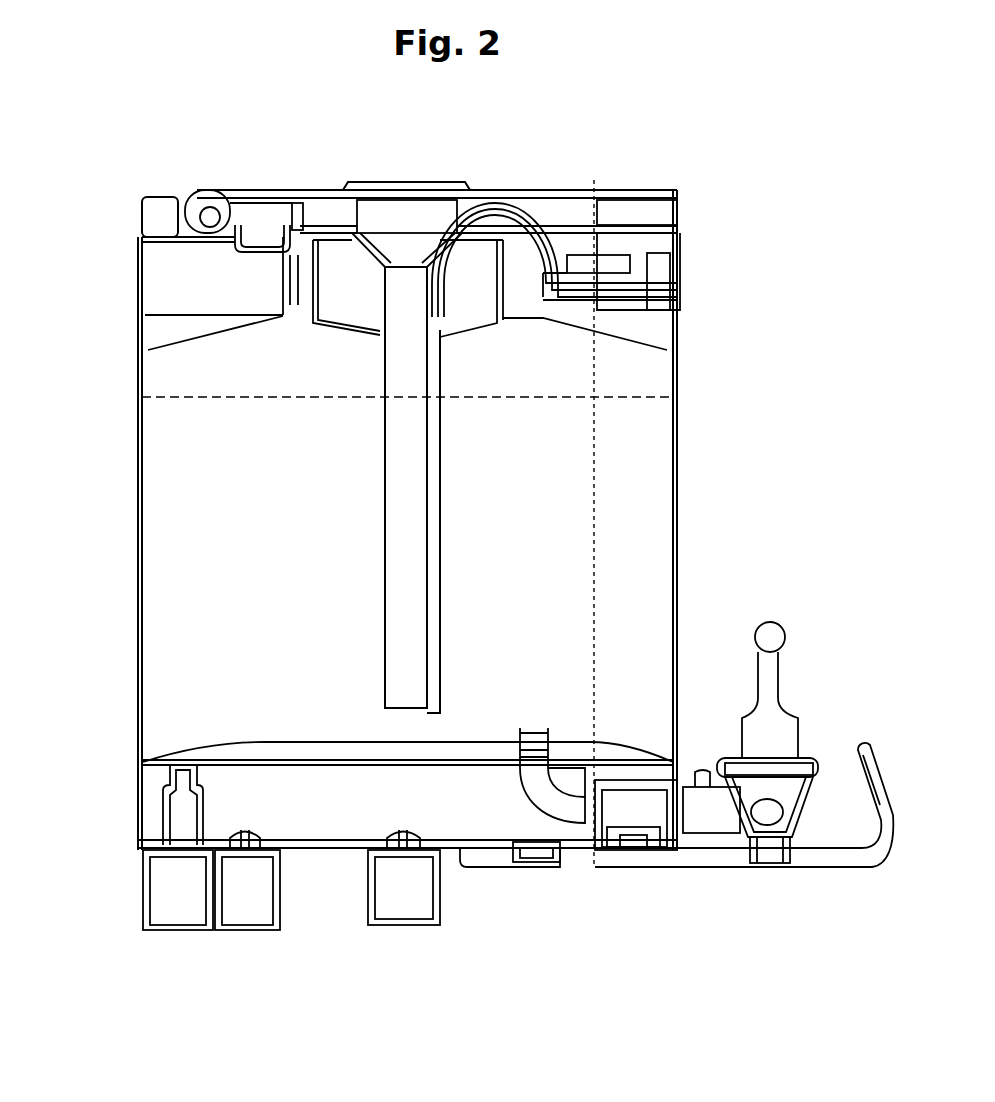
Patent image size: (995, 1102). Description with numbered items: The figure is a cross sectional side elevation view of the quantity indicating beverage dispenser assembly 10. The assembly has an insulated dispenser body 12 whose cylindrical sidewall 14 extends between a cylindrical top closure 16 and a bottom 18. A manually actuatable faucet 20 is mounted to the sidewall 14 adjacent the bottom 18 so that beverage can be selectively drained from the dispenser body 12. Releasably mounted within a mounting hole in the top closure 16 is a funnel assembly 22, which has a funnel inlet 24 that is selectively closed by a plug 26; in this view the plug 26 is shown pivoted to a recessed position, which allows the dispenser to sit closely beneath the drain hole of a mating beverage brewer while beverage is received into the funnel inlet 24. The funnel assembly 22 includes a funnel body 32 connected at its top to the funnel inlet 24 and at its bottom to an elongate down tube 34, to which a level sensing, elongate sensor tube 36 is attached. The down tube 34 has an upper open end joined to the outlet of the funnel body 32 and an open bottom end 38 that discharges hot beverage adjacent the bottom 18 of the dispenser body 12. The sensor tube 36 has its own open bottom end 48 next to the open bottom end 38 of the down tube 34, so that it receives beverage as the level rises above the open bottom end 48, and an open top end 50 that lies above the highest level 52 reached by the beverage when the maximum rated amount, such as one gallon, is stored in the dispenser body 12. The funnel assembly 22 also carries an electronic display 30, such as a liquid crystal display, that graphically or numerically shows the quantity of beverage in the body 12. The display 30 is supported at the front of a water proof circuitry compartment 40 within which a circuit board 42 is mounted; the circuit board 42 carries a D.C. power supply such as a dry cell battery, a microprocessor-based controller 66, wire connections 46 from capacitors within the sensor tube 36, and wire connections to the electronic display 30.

The quantity indicating beverage dispenser assembly 10 is at (668, 143).
The dispenser body 12 is at (650, 462).
The cylindrical sidewall 14 is at (676, 407).
The cylindrical top closure 16 is at (597, 180).
The bottom 18 is at (265, 745).
The manually actuatable faucet 20 is at (778, 715).
The funnel assembly 22 is at (372, 240).
The funnel inlet 24 is at (462, 195).
The plug 26 is at (268, 218).
The electronic display 30 is at (660, 266).
The funnel body 32 is at (365, 258).
The elongate down tube 34 is at (397, 586).
The elongate sensor tube 36 is at (440, 522).
The open bottom end 38 is at (432, 713).
The water proof circuitry compartment 40 is at (650, 243).
The circuit board 42 is at (672, 325).
The wire connections 46 is at (535, 200).
The open bottom end 48 is at (676, 300).
The open top end 50 is at (440, 340).
The highest level 52 is at (160, 397).
The microprocessor-based controller 66 is at (610, 255).